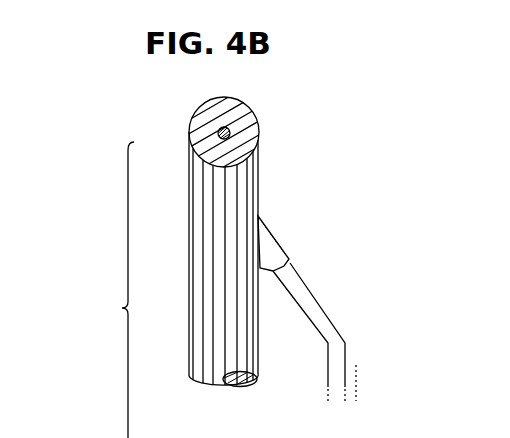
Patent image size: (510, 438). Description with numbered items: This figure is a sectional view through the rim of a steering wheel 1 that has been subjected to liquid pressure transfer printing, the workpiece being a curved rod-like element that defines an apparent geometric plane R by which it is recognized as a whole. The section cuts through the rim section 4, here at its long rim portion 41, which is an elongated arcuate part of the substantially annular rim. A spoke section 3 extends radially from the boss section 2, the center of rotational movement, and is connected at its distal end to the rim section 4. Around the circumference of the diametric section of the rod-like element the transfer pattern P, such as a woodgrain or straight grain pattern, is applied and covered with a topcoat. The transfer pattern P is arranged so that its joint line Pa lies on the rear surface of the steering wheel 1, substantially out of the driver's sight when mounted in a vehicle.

The apparent geometric plane R is at (183, 172).
The steering wheel 1 is at (335, 172).
The transfer pattern P is at (212, 261).
The joint line Pa is at (237, 200).
The rim section 4 is at (242, 274).
The spoke section 3 is at (290, 278).
The boss section 2 is at (354, 366).
The long rim portion 41 is at (86, 290).